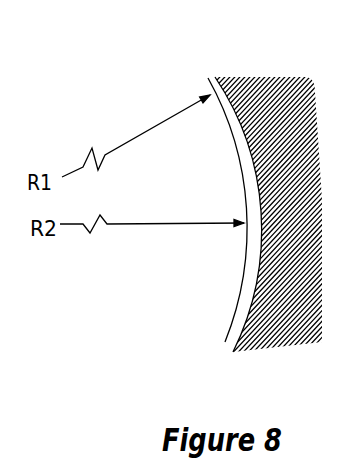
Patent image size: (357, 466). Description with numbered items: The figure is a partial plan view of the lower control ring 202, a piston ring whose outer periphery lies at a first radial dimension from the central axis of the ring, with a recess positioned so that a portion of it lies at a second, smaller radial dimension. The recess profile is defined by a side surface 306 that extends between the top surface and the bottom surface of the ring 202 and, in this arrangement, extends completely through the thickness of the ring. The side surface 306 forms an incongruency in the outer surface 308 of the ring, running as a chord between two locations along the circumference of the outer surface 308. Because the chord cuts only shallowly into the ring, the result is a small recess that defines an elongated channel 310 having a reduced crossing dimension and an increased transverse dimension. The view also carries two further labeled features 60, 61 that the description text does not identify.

The housing 60 is at (178, 186).
The housing wall 61 is at (231, 95).
The lower control ring 202 is at (175, 225).
The side surface 306 is at (224, 214).
The outer surface 308 is at (231, 132).
The elongated channel 310 is at (202, 214).